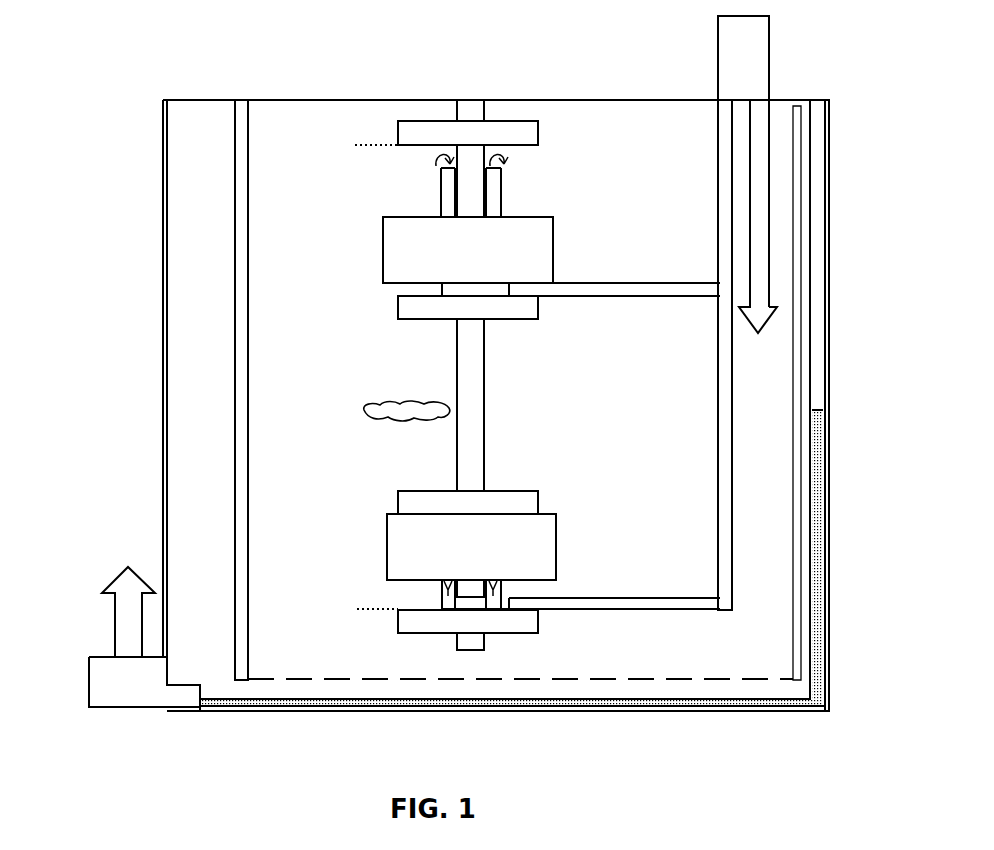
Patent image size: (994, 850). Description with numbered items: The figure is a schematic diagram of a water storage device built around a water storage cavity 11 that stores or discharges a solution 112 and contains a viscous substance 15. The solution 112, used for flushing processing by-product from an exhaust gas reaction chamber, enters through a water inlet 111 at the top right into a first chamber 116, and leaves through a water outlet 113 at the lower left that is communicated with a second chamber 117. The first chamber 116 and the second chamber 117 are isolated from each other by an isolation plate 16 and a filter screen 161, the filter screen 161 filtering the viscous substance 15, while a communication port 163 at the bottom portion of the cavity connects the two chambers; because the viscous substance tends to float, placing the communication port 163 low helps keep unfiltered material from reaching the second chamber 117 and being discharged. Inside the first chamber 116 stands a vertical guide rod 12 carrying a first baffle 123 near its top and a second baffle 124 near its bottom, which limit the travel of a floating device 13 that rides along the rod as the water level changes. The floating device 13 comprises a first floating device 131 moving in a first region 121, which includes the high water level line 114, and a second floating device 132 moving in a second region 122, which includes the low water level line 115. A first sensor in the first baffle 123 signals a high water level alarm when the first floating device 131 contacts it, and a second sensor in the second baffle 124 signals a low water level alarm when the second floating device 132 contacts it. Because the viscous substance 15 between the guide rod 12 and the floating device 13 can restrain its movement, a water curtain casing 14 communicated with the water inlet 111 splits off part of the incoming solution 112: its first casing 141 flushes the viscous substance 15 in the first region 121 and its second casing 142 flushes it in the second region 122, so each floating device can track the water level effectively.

The water storage cavity 11 is at (312, 45).
The second chamber 117 is at (202, 125).
The first chamber 116 is at (271, 125).
The solution 112 is at (629, 440).
The water inlet 111 is at (750, 73).
The water outlet 113 is at (117, 683).
The isolation plate 16 is at (243, 668).
The communication port 163 is at (236, 691).
The filter screen 161 is at (486, 680).
The guide rod 12 is at (472, 110).
The first baffle 123 is at (528, 130).
The second baffle 124 is at (532, 623).
The high water level line 114 is at (367, 145).
The low water level line 115 is at (373, 612).
The first region 121 is at (340, 145).
The second region 122 is at (330, 515).
The first casing 141 is at (447, 291).
The second casing 142 is at (442, 603).
The water curtain casing 14 is at (345, 315).
The first floating device 131 is at (538, 260).
The second floating device 132 is at (538, 538).
The floating device 13 is at (598, 348).
The viscous substance 15 is at (393, 407).